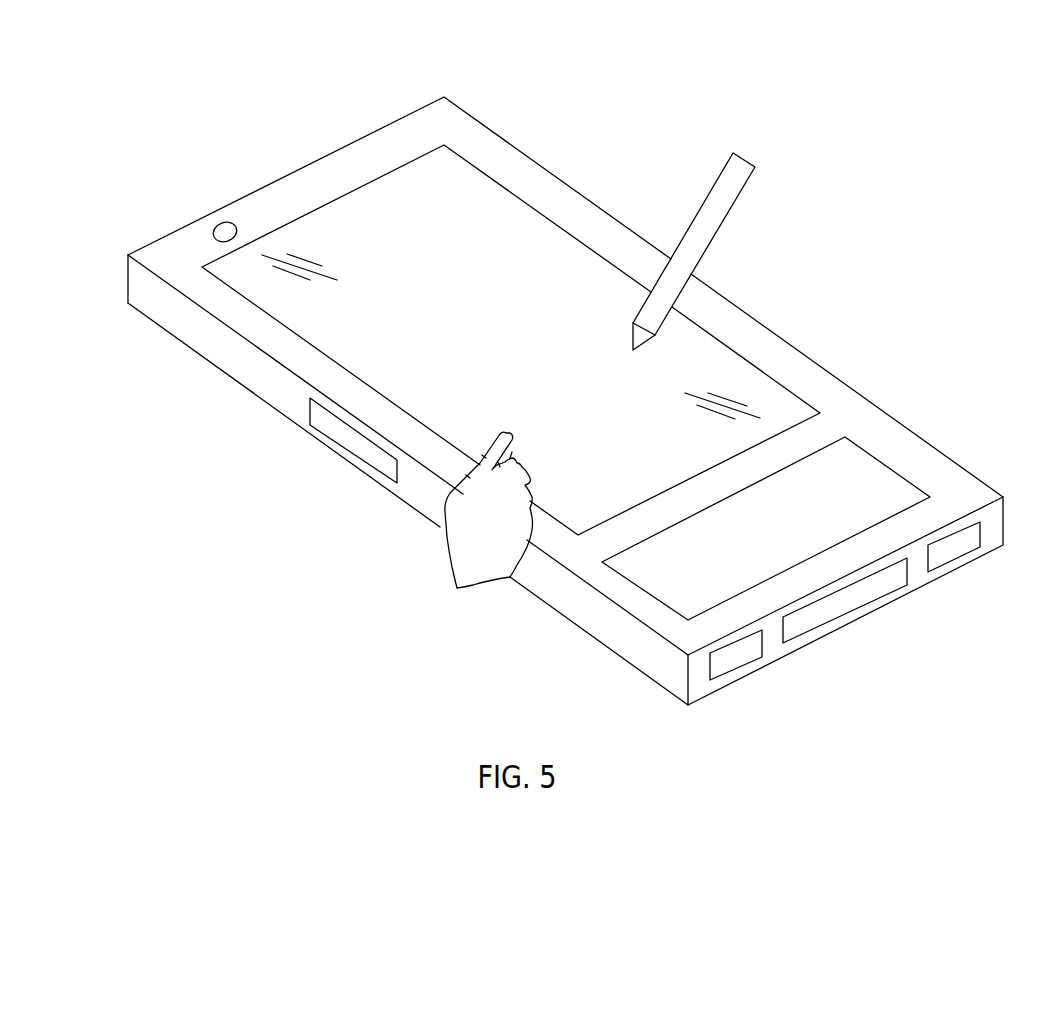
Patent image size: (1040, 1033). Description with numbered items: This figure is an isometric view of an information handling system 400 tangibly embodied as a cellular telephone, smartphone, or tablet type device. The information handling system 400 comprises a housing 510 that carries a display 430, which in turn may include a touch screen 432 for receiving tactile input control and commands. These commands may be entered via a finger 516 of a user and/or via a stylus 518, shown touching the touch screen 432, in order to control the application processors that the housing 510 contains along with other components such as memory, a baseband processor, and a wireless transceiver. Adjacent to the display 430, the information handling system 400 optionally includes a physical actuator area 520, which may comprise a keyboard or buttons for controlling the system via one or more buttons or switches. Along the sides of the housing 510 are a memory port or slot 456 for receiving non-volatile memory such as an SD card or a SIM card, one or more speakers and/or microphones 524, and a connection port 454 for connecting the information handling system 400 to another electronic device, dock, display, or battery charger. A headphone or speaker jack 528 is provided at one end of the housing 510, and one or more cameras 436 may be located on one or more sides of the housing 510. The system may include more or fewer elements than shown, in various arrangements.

The information handling system 400 is at (552, 404).
The display 430 is at (446, 208).
The touch screen 432 is at (543, 350).
The camera 436 is at (213, 212).
The connection port 454 is at (860, 608).
The memory port or slot 456 is at (327, 437).
The housing 510 is at (385, 126).
The finger 516 is at (506, 432).
The stylus 518 is at (712, 188).
The physical actuator area 520 is at (857, 487).
The speakers and/or microphones 524 is at (960, 557).
The headphone or speaker jack 528 is at (153, 242).